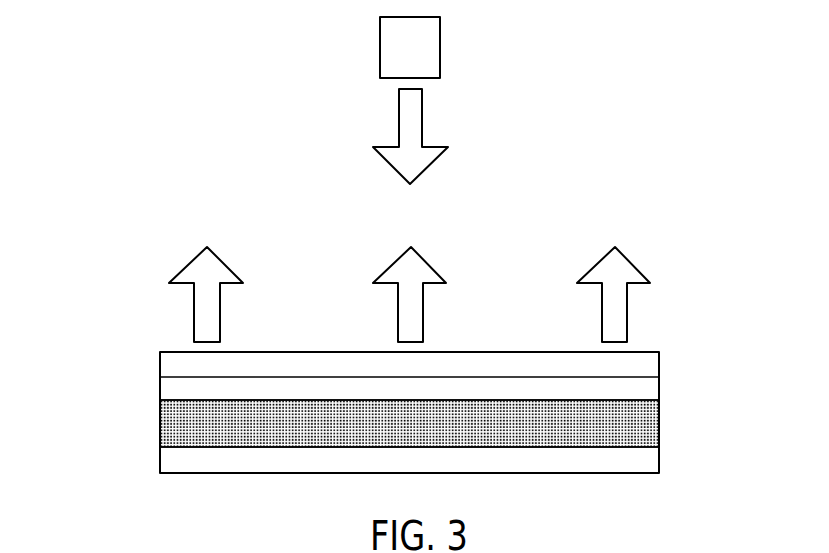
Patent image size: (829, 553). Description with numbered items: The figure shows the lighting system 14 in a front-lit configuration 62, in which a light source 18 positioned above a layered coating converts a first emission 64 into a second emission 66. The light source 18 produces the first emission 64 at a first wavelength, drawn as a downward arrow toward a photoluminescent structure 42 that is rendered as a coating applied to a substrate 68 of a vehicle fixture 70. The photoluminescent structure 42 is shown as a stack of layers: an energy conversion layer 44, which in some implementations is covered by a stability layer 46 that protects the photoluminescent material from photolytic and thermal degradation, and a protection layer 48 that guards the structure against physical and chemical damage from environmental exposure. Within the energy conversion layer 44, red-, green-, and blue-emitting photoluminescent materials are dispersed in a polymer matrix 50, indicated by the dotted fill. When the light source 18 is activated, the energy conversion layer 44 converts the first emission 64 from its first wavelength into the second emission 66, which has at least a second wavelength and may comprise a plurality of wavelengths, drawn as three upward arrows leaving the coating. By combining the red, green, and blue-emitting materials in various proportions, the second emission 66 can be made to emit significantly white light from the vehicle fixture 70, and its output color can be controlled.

The lighting system 14 is at (181, 112).
The light source 18 is at (397, 59).
The photoluminescent structure 42 is at (378, 401).
The energy conversion layer 44 is at (653, 423).
The stability layer 46 is at (653, 388).
The protection layer 48 is at (653, 367).
The polymer matrix 50 is at (183, 420).
The front-lit configuration 62 is at (524, 162).
The first emission 64 is at (400, 113).
The second emission 66 is at (232, 268).
The substrate 68 is at (653, 457).
The vehicle fixture 70 is at (122, 330).